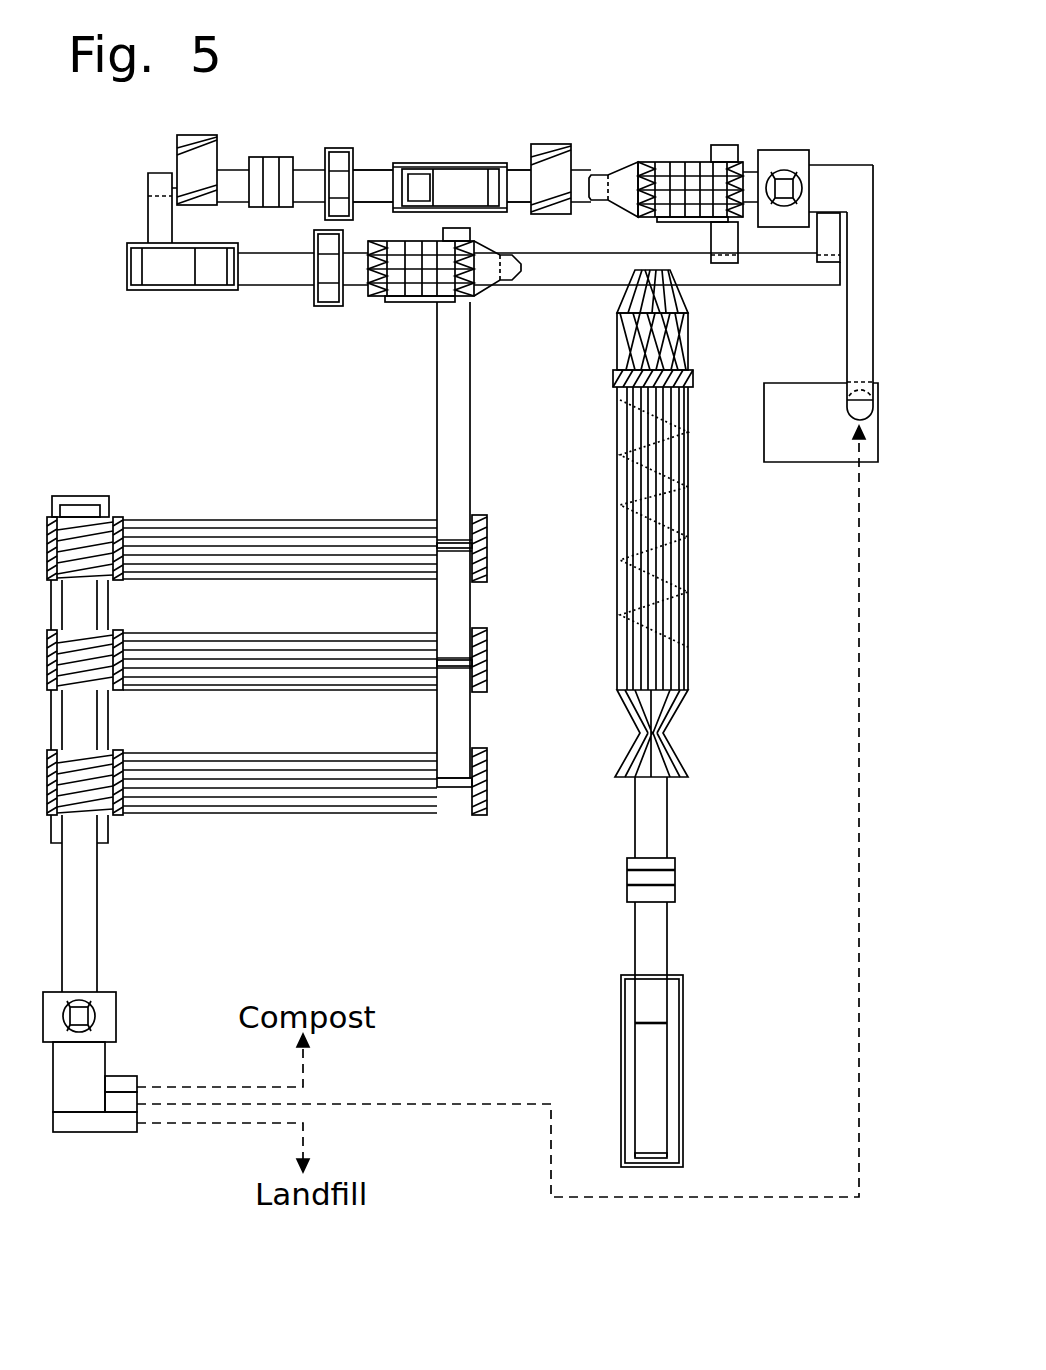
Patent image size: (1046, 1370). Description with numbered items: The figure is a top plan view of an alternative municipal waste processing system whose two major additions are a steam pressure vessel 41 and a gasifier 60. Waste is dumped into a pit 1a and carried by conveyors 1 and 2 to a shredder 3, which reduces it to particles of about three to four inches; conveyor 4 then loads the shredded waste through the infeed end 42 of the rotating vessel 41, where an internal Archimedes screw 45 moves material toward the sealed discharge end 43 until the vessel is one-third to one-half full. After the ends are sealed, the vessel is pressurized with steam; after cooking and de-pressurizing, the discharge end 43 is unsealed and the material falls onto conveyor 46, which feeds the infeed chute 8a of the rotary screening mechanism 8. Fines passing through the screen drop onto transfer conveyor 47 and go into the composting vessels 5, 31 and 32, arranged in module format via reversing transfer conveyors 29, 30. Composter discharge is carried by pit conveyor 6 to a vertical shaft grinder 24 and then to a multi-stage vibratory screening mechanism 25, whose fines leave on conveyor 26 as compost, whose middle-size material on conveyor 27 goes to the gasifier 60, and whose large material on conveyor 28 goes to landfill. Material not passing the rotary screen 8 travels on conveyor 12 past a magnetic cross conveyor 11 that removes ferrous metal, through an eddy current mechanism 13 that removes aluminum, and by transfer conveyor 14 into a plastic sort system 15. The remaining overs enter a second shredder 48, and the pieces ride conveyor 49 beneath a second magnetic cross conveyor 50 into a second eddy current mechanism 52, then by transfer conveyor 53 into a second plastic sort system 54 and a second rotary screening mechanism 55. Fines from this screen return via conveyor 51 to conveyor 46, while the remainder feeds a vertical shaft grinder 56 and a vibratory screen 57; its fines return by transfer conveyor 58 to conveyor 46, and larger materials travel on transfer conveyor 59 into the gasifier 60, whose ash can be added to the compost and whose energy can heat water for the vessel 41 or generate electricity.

The conveyor 1 is at (665, 1098).
The pit 1a is at (684, 1018).
The conveyor 2 is at (665, 945).
The shredder 3 is at (675, 880).
The conveyor 4 is at (667, 810).
The composting vessel 5 is at (290, 517).
The pit conveyor 6 is at (96, 890).
The rotary screening mechanism 8 is at (408, 300).
The infeed chute 8a is at (490, 289).
The magnetic cross conveyor 11 is at (332, 310).
The conveyor 12 is at (262, 290).
The eddy current mechanism 13 is at (170, 290).
The transfer conveyor 14 is at (155, 220).
The plastic sort system 15 is at (182, 166).
The vertical shaft grinder 24 is at (85, 1005).
The multi-stage vibratory screening mechanism 25 is at (100, 1057).
The conveyor 26 is at (120, 1080).
The conveyor 27 is at (132, 1098).
The conveyor 28 is at (109, 1132).
The reversing transfer conveyor 29 is at (464, 612).
The reversing transfer conveyor 30 is at (462, 716).
The composting vessel 31 is at (228, 630).
The composting vessel 32 is at (287, 813).
The steam pressure vessel 41 is at (690, 555).
The infeed end 42 is at (680, 715).
The discharge end 43 is at (641, 253).
The Archimedes screw 45 is at (612, 448).
The conveyor 46 is at (553, 285).
The transfer conveyor 47 is at (470, 452).
The second shredder 48 is at (270, 157).
The conveyor 49 is at (373, 167).
The second magnetic cross conveyor 50 is at (338, 148).
The conveyor 51 is at (733, 247).
The second eddy current mechanism 52 is at (460, 172).
The transfer conveyor 53 is at (520, 168).
The second plastic sort system 54 is at (553, 143).
The second rotary screening mechanism 55 is at (693, 162).
The vertical shaft grinder 56 is at (783, 170).
The vibratory screen 57 is at (823, 167).
The transfer conveyor 58 is at (817, 243).
The transfer conveyor 59 is at (847, 335).
The gasifier 60 is at (822, 462).